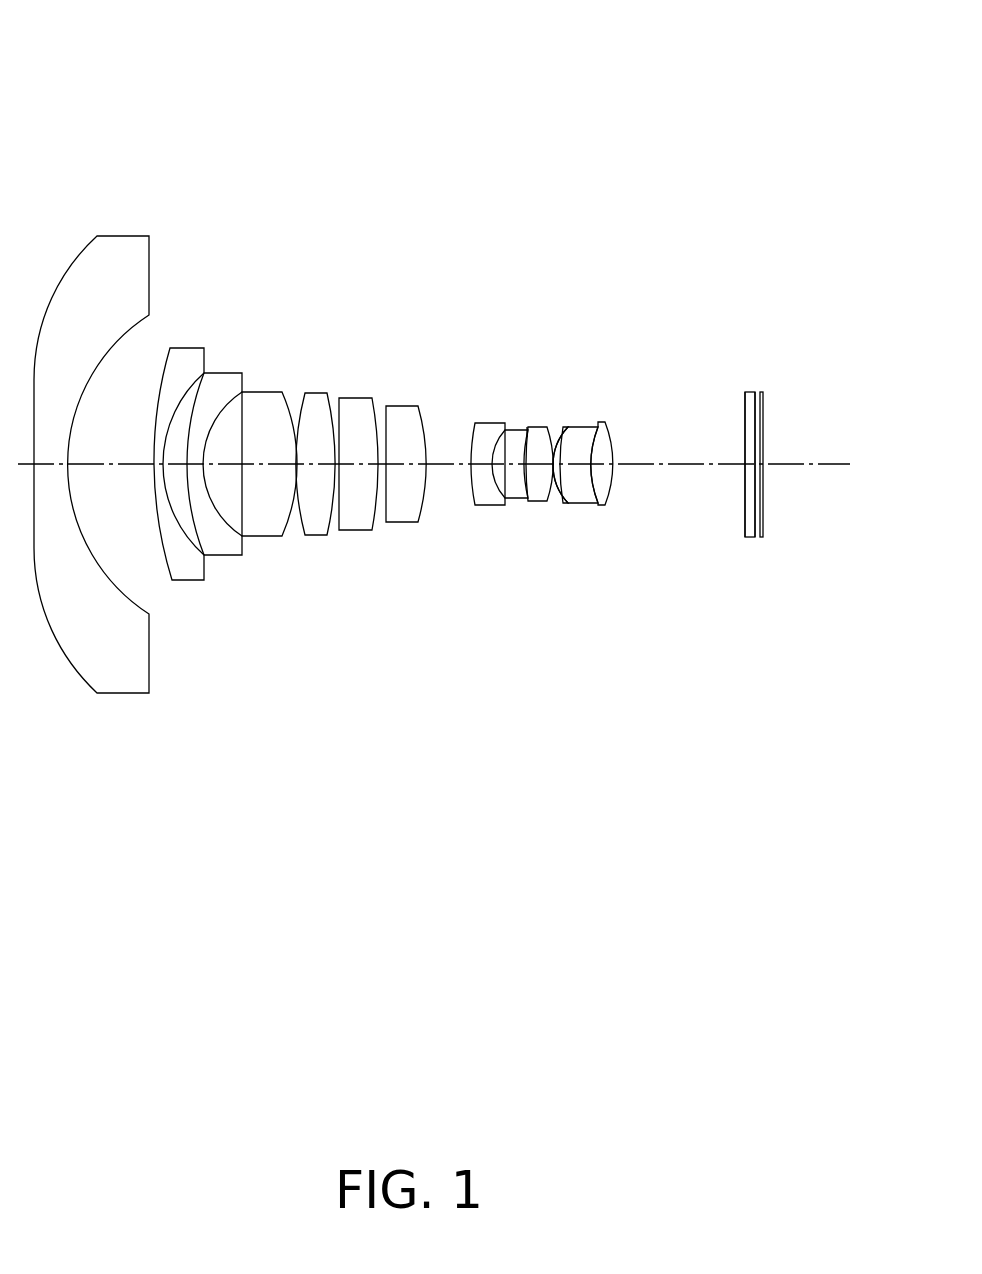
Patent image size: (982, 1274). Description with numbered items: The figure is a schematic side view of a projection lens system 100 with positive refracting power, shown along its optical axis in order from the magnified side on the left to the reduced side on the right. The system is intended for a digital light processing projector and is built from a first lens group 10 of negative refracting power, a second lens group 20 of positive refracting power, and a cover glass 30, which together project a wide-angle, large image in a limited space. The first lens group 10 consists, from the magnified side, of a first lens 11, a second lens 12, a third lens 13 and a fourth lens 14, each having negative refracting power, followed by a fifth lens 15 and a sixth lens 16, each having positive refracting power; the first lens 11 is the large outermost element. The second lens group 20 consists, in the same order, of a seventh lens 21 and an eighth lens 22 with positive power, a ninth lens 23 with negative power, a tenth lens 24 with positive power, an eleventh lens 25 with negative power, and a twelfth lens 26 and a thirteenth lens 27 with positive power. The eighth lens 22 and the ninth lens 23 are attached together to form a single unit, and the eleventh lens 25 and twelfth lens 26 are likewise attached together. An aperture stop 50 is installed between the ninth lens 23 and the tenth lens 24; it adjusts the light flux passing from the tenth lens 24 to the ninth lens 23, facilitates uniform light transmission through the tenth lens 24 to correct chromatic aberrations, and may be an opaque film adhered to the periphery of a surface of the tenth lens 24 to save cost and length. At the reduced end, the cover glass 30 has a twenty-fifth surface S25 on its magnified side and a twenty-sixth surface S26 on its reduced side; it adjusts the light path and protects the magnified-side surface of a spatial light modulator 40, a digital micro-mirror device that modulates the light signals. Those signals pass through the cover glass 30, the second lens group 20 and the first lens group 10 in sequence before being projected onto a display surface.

The projection lens system 100 is at (260, 66).
The first lens group 10 is at (214, 527).
The first lens 11 is at (117, 668).
The second lens 12 is at (188, 562).
The third lens 13 is at (218, 540).
The fourth lens 14 is at (260, 523).
The fifth lens 15 is at (315, 523).
The sixth lens 16 is at (367, 576).
The second lens group 20 is at (538, 540).
The seventh lens 21 is at (405, 508).
The eighth lens 22 is at (470, 503).
The ninth lens 23 is at (517, 503).
The tenth lens 24 is at (545, 502).
The eleventh lens 25 is at (563, 503).
The twelfth lens 26 is at (583, 503).
The thirteenth lens 27 is at (640, 514).
The cover glass 30 is at (745, 537).
The spatial light modulator 40 is at (761, 520).
The aperture stop 50 is at (527, 437).
The twenty-fifth surface S25 is at (745, 410).
The twenty-sixth surface S26 is at (762, 392).